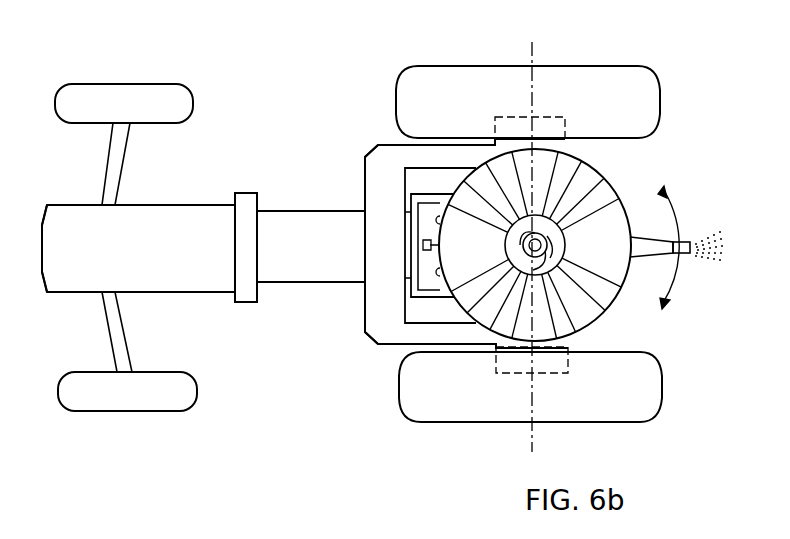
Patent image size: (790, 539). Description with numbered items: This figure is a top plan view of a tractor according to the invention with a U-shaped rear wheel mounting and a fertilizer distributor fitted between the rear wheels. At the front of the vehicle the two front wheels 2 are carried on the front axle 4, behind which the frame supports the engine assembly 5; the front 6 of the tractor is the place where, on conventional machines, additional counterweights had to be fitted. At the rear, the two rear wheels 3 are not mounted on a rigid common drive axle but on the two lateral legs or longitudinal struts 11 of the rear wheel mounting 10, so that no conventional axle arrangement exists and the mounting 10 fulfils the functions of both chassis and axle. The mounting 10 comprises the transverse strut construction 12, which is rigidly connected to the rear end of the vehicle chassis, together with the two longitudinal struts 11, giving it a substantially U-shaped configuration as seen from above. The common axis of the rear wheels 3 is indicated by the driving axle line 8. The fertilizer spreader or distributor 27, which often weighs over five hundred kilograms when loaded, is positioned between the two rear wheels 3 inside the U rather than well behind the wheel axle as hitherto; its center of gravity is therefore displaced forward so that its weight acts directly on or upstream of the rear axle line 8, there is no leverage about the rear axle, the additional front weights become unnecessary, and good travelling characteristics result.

The front wheels 2 is at (86, 92).
The rear wheels 3 is at (437, 66).
The front axle 4 is at (112, 327).
The engine assembly 5 is at (181, 213).
The front of the tractor 6 is at (57, 213).
The driving axle line 8 is at (530, 50).
The rear wheel mounting 10 is at (365, 170).
The longitudinal struts 11 is at (403, 157).
The transverse strut construction 12 is at (373, 302).
The fertilizer distributor 27 is at (648, 321).